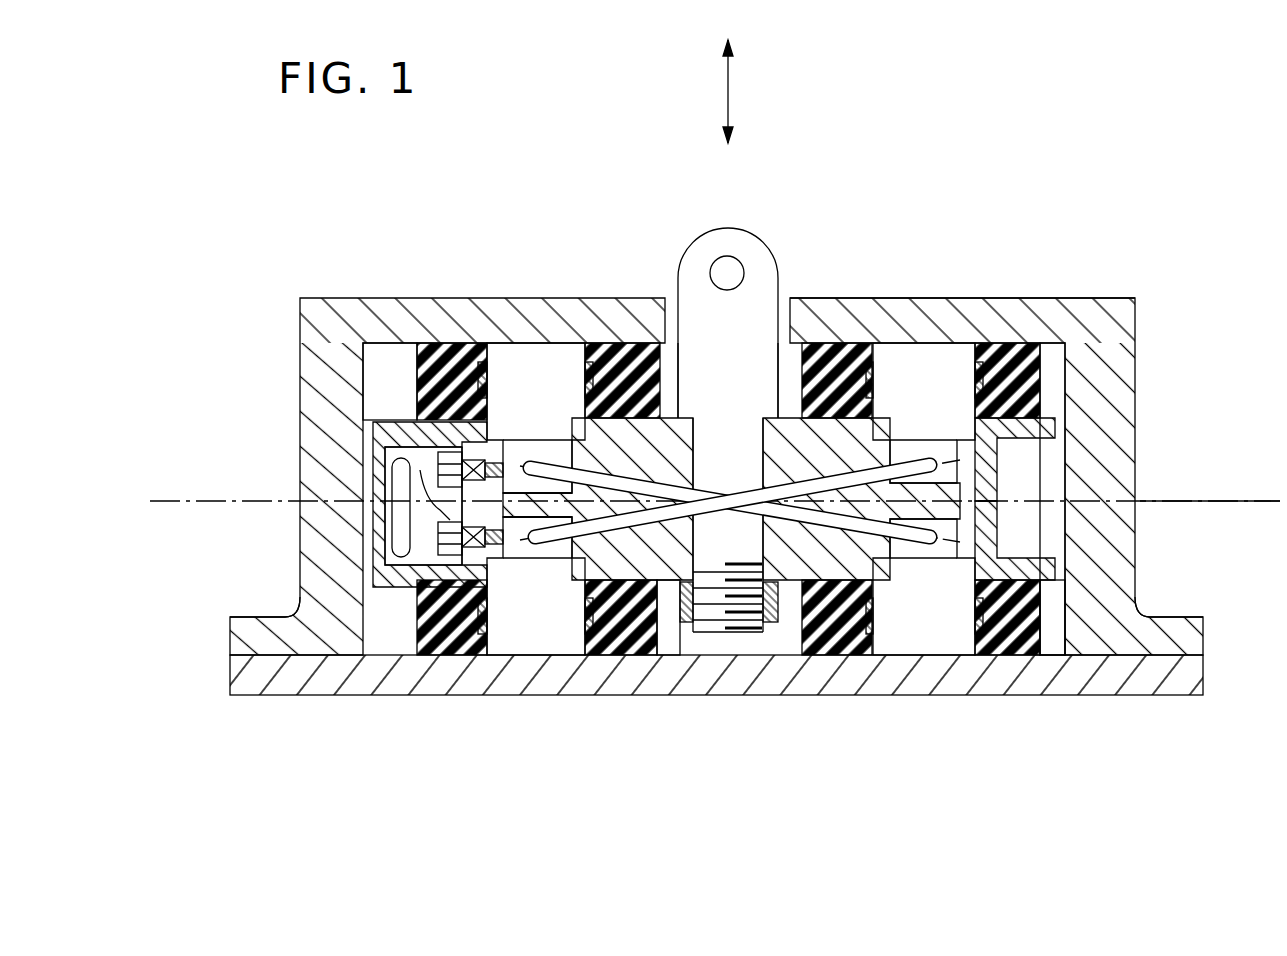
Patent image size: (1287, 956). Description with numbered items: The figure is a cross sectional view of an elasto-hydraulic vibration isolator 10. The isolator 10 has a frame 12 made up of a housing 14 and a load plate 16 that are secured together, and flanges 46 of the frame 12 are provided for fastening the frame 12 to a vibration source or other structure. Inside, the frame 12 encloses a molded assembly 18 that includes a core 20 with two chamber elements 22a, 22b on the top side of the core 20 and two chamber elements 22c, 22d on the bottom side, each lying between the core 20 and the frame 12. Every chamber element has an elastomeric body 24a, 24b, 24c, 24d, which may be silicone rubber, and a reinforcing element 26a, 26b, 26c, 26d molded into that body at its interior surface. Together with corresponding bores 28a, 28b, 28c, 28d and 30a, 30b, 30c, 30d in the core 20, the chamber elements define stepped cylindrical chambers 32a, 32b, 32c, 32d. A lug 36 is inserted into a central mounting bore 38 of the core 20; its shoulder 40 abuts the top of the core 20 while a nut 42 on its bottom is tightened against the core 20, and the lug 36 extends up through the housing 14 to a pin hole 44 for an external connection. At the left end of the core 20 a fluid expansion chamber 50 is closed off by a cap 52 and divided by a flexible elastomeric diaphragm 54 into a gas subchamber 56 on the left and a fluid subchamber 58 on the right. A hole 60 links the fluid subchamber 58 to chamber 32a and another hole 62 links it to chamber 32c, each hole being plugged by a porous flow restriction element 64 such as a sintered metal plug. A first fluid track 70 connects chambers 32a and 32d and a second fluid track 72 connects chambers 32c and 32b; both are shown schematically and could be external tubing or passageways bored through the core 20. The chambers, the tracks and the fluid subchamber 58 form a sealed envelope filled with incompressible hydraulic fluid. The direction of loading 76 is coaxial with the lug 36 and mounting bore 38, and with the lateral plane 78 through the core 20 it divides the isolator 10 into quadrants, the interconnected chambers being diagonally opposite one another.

The elasto-hydraulic vibration isolator 10 is at (421, 208).
The frame 12 is at (1142, 378).
The housing 14 is at (1100, 298).
The load plate 16 is at (1122, 688).
The molded assembly 18 is at (1003, 541).
The core 20 is at (998, 465).
The chamber element 22a is at (440, 338).
The chamber element 22b is at (845, 338).
The chamber element 22c is at (660, 632).
The chamber element 22d is at (794, 628).
The elastomeric body 24a is at (418, 378).
The elastomeric body 24b is at (1018, 340).
The elastomeric body 24c is at (420, 628).
The elastomeric body 24d is at (995, 657).
The reinforcing element 26a is at (490, 380).
The reinforcing element 26b is at (880, 384).
The reinforcing element 26c is at (490, 612).
The reinforcing element 26d is at (880, 618).
The bore 28a is at (497, 410).
The bore 28b is at (890, 412).
The bore 28c is at (528, 660).
The bore 28d is at (966, 580).
The bore 30a is at (500, 432).
The bore 30b is at (957, 457).
The bore 30c is at (520, 560).
The bore 30d is at (956, 540).
The stepped cylindrical chamber 32a is at (568, 340).
The stepped cylindrical chamber 32b is at (958, 300).
The stepped cylindrical chamber 32c is at (500, 657).
The stepped cylindrical chamber 32d is at (903, 657).
The lug 36 is at (767, 243).
The central mounting bore 38 is at (703, 440).
The shoulder 40 is at (776, 412).
The nut 42 is at (722, 640).
The pin hole 44 is at (727, 270).
The flanges 46 is at (258, 600).
The fluid expansion chamber 50 is at (420, 452).
The cap 52 is at (372, 430).
The flexible elastomeric diaphragm 54 is at (390, 485).
The gas subchamber 56 is at (405, 520).
The fluid subchamber 58 is at (400, 540).
The hole 60 is at (503, 472).
The hole 62 is at (503, 548).
The flow restriction element 64 is at (460, 480).
The first fluid track 70 is at (708, 490).
The second fluid track 72 is at (700, 510).
The direction of loading 76 is at (730, 90).
The lateral plane 78 is at (1207, 500).